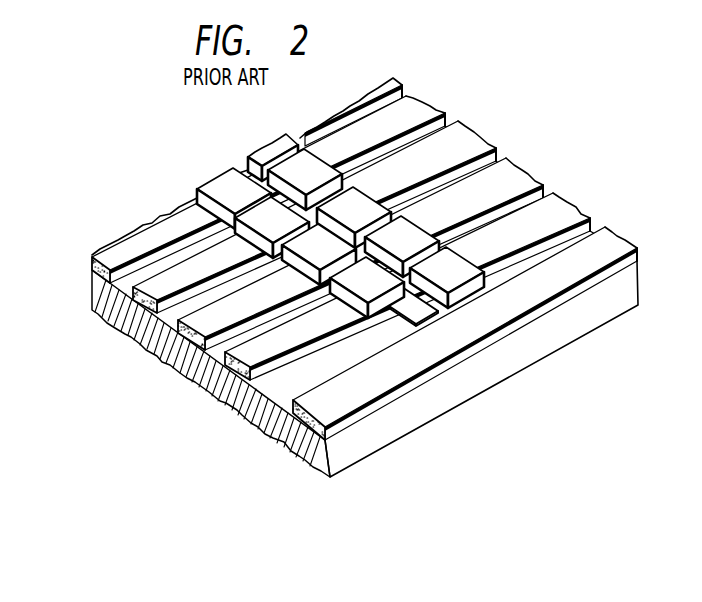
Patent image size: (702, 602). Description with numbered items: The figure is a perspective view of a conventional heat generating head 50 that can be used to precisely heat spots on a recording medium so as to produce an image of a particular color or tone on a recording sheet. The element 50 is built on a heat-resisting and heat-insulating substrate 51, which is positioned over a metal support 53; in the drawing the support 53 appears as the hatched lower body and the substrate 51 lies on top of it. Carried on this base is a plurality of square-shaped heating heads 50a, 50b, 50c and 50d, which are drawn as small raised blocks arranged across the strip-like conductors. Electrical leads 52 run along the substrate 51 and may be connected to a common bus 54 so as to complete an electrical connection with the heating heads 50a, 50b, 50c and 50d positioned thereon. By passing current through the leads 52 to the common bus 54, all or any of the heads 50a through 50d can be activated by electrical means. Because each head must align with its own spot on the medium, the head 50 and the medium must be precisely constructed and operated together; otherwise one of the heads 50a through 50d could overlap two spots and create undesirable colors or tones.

The heat generating head 50 is at (338, 280).
The heating head 50a is at (412, 232).
The heating head 50b is at (467, 272).
The heating head 50c is at (307, 242).
The heating head 50d is at (378, 283).
The heat-resisting and heat-insulating substrate 51 is at (92, 276).
The electrical leads 52 is at (260, 348).
The metal support 53 is at (114, 312).
The common bus 54 is at (342, 400).